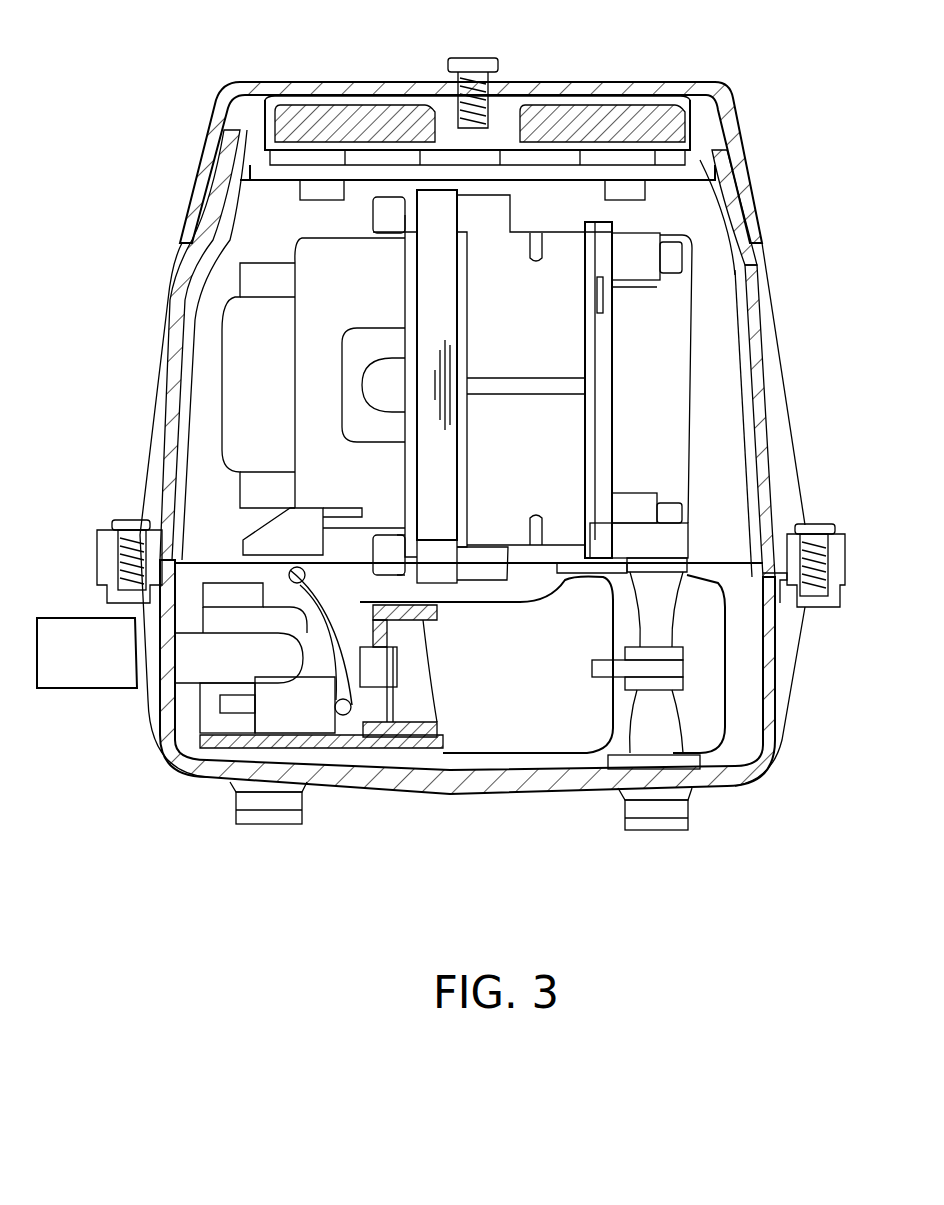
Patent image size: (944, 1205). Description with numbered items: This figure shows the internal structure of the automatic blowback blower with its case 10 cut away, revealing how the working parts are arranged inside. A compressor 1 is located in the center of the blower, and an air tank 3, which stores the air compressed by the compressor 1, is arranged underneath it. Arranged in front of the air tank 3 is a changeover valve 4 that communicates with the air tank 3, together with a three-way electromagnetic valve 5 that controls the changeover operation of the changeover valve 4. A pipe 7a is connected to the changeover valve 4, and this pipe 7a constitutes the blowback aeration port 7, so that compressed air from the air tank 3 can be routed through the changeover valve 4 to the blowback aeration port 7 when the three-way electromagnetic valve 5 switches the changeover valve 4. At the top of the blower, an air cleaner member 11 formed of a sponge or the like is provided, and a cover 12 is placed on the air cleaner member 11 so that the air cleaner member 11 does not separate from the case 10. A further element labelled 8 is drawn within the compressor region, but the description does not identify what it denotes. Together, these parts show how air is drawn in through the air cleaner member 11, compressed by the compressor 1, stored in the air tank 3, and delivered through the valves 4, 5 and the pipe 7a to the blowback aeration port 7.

The compressor 1 is at (310, 255).
The air tank 3 is at (415, 737).
The changeover valve 4 is at (212, 705).
The three-way electromagnetic valve 5 is at (312, 722).
The blowback aeration port 7 is at (58, 640).
The pipe 7a is at (190, 655).
The bracket 8 is at (378, 626).
The case 10 is at (775, 308).
The air cleaner member 11 is at (640, 108).
The cover 12 is at (576, 82).